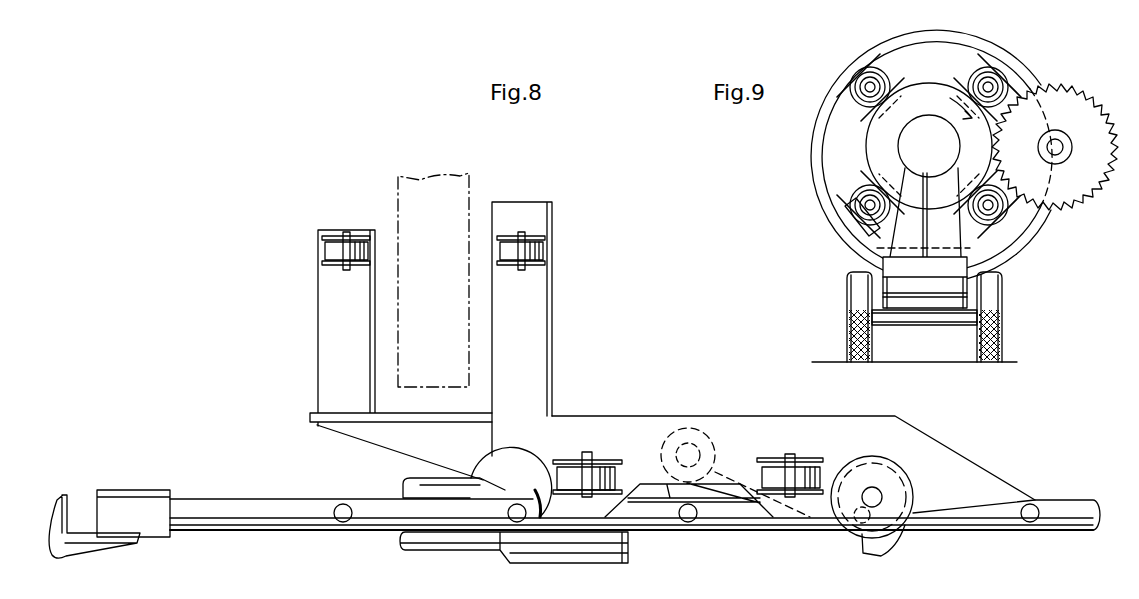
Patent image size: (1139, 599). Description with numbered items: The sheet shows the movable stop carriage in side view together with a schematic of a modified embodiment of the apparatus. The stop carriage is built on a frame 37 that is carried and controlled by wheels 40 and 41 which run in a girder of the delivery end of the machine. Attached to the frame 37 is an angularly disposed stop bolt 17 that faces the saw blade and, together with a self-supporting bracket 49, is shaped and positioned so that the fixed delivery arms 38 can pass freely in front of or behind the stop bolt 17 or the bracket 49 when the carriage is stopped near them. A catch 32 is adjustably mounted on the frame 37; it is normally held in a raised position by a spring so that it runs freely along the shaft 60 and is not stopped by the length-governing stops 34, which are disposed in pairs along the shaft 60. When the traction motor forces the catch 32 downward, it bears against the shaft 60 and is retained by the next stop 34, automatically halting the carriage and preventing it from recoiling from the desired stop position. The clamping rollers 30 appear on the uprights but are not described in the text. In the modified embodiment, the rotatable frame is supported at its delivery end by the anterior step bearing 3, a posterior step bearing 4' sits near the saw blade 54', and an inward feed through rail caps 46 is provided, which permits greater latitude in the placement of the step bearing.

In FIG. 8, the shaft 60 is at (240, 503).
In FIG. 8, the length-governing stops 34 is at (342, 519).
In FIG. 8, the self-supporting bracket 49 is at (325, 353).
In FIG. 8, the stop bolt 17 is at (548, 217).
In FIG. 8, the clamping roller 30 is at (335, 253).
In FIG. 8, the fixed delivery arms 38 is at (403, 183).
In FIG. 8, the frame 37 is at (597, 417).
In FIG. 8, the catch 32 is at (703, 433).
In FIG. 8, the wheels 40 is at (602, 472).
In FIG. 8, the wheels 41 is at (523, 463).
In FIG. 9, the posterior step bearing 4' is at (931, 156).
In FIG. 9, the anterior step bearing 3 is at (876, 246).
In FIG. 9, the rail caps 46 is at (845, 203).
In FIG. 9, the saw blade 54' is at (1055, 130).